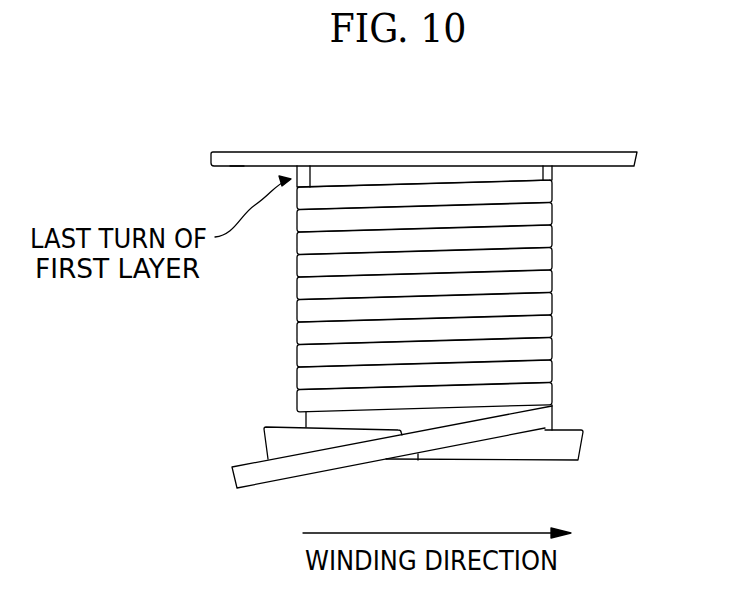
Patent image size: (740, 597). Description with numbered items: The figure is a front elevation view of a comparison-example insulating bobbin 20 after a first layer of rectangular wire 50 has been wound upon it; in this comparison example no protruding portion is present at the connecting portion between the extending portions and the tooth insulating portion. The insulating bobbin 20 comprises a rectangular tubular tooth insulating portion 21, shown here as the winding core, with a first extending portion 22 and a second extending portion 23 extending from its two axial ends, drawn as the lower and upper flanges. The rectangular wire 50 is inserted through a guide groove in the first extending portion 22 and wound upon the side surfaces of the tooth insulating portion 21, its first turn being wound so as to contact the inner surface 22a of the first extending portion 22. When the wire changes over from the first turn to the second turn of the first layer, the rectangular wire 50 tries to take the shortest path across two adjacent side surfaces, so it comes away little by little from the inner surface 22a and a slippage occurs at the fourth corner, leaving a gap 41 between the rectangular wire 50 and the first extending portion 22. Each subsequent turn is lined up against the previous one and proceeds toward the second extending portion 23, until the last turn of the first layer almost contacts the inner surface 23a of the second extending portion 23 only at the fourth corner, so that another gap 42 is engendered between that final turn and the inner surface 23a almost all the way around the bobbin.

The insulating bobbin 20 is at (594, 144).
The tooth insulating portion 21 is at (363, 176).
The first extending portion 22 is at (583, 448).
The inner surface of the first extending portion 22a is at (568, 430).
The second extending portion 23 is at (492, 151).
The inner surface of the second extending portion 23a is at (237, 167).
The gap 41 is at (305, 422).
The gap 42 is at (549, 172).
The rectangular wire 50 is at (297, 268).